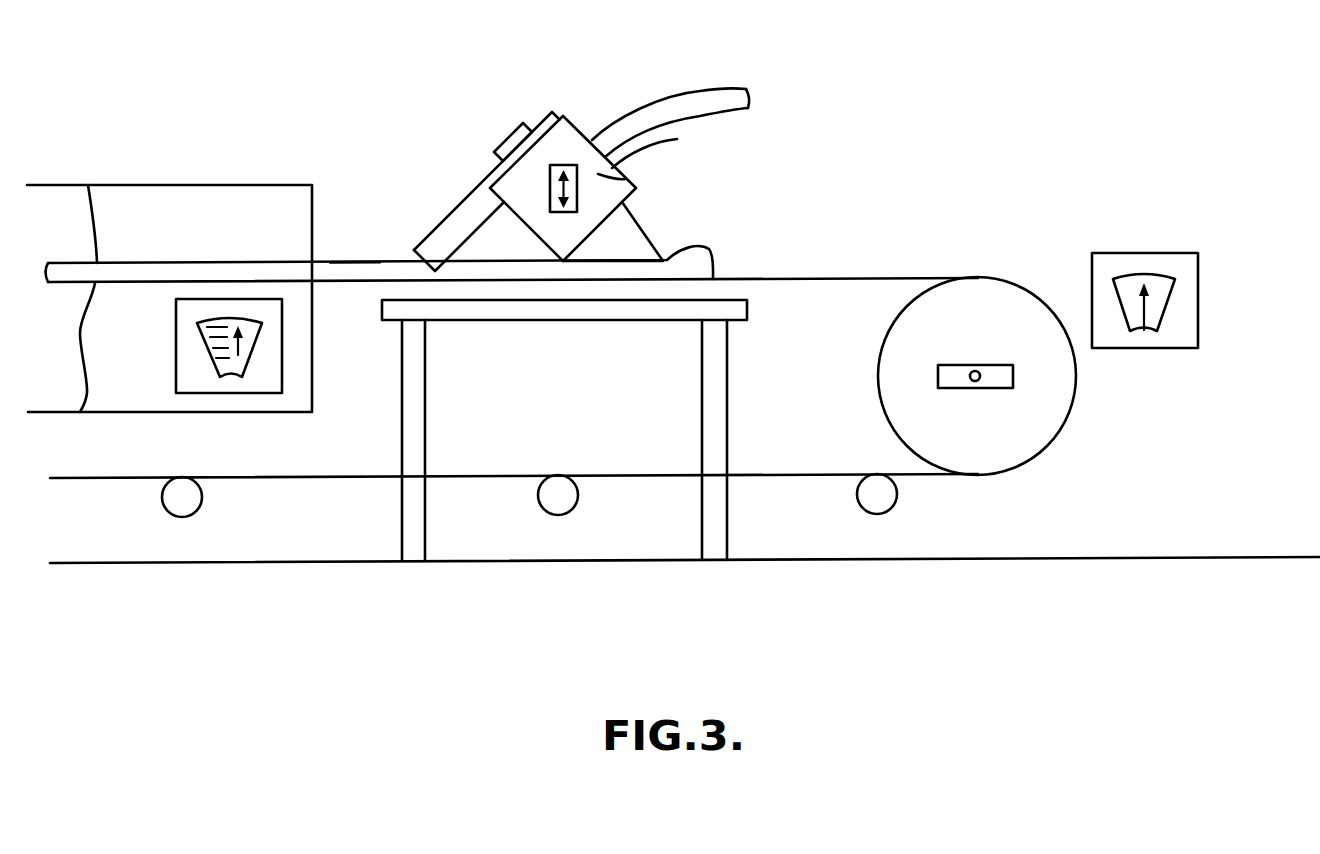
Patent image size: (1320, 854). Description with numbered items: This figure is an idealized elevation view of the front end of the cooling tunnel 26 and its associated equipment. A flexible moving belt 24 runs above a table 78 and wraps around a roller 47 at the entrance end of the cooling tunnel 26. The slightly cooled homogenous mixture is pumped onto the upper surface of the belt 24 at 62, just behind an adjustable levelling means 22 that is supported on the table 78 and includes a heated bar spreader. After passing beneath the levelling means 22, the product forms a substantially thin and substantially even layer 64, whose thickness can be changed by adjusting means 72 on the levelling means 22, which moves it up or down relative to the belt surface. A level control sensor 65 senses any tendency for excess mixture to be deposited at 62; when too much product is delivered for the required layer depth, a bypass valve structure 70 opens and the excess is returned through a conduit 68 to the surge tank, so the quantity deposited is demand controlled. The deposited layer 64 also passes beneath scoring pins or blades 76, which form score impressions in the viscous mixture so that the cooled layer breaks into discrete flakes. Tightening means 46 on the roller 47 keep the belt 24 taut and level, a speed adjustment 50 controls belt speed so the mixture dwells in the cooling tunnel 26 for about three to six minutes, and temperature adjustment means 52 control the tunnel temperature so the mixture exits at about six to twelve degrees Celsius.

The adjustable levelling means 22 is at (677, 139).
The moving belt 24 is at (857, 277).
The cooling tunnel 26 is at (192, 212).
The tightening means 46 is at (997, 373).
The roller 47 is at (917, 435).
The speed adjustment 50 is at (1125, 316).
The temperature adjustment means 52 is at (193, 360).
The deposit location 62 is at (707, 262).
The substantially thin and substantially even layer 64 is at (347, 273).
The level control sensor 65 is at (513, 136).
The conduit 68 is at (667, 108).
The bypass valve structure 70 is at (613, 247).
The adjusting means 72 is at (577, 190).
The scoring pins or blades 76 is at (440, 236).
The table 78 is at (613, 320).